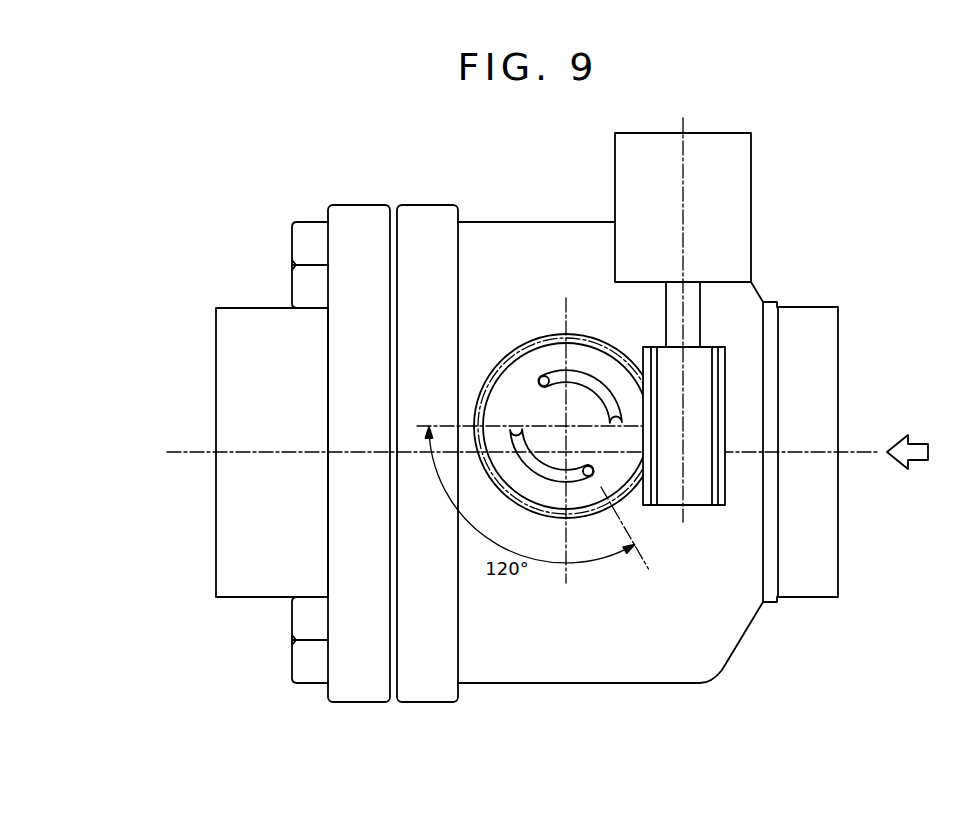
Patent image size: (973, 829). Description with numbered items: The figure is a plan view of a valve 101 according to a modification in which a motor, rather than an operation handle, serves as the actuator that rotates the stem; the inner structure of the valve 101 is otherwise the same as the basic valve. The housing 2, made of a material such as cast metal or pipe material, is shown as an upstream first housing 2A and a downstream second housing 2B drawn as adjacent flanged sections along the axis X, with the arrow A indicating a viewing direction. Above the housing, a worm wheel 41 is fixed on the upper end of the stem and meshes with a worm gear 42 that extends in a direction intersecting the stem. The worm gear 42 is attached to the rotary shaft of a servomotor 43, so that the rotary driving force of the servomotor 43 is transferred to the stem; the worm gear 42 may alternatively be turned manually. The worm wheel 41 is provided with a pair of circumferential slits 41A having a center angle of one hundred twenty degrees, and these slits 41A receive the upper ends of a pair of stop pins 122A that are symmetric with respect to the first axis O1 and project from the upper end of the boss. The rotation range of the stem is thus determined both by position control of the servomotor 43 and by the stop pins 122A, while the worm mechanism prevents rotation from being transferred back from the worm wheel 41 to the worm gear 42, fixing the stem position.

The valve 101 is at (527, 194).
The housing 2 is at (393, 500).
The first housing 2A is at (427, 483).
The second housing 2B is at (372, 703).
The worm wheel 41 is at (552, 358).
The circumferential slits 41A is at (592, 381).
The stop pins 122A is at (538, 377).
The worm gear 42 is at (700, 499).
The servomotor 43 is at (743, 202).
The first axis O1 is at (563, 423).
The axis X is at (192, 448).
The viewing direction A is at (917, 452).